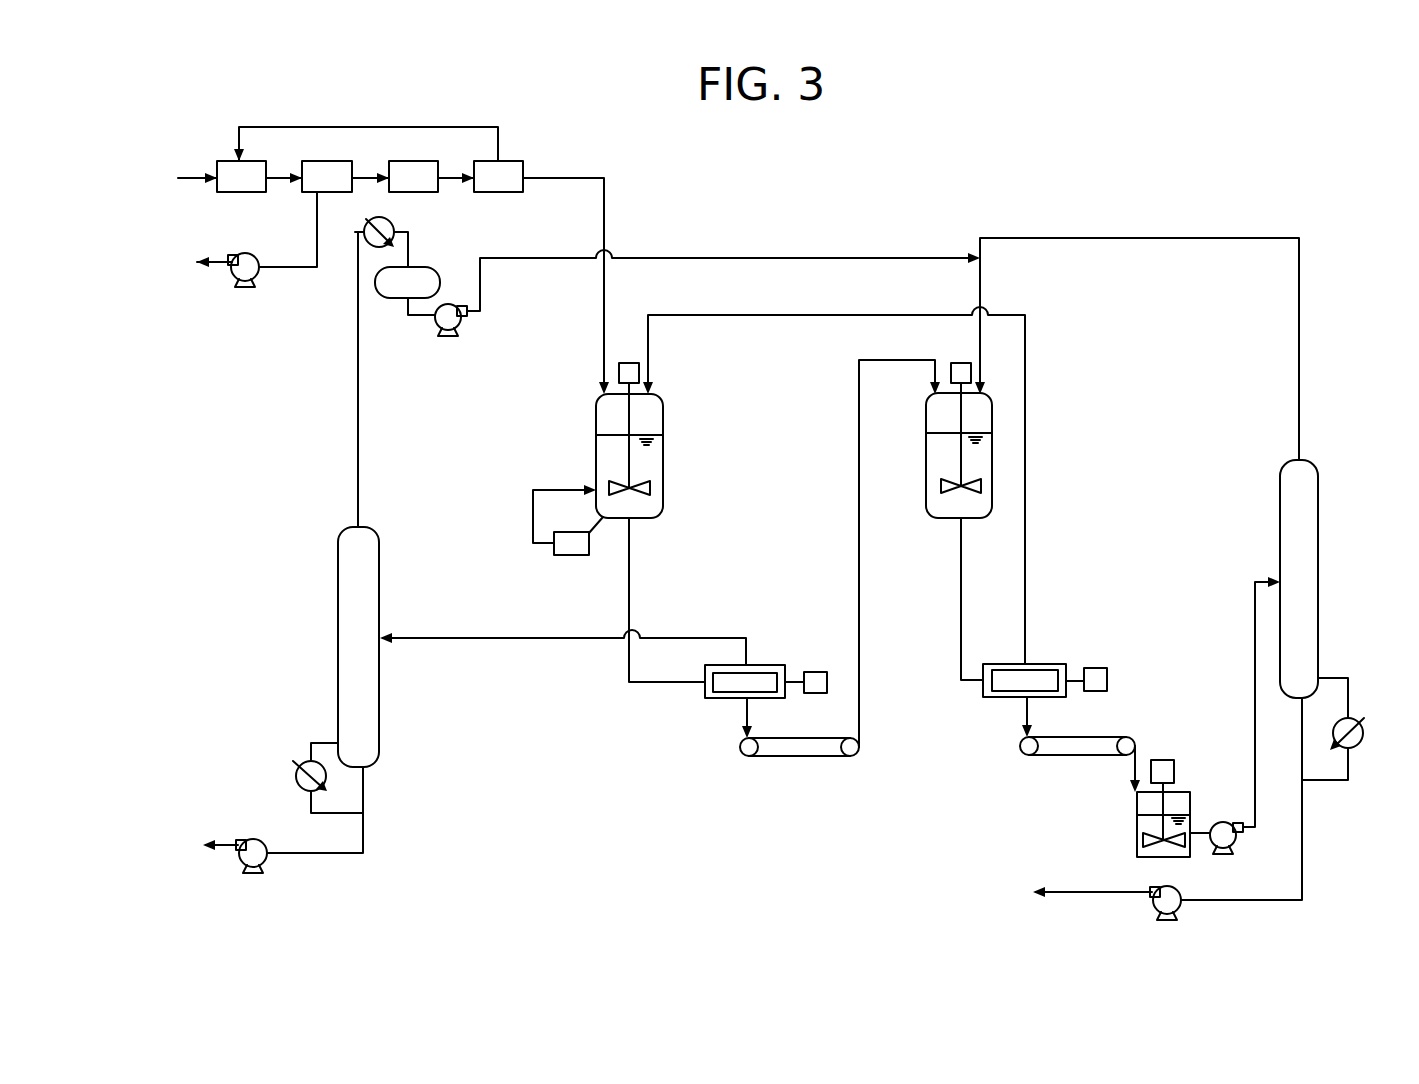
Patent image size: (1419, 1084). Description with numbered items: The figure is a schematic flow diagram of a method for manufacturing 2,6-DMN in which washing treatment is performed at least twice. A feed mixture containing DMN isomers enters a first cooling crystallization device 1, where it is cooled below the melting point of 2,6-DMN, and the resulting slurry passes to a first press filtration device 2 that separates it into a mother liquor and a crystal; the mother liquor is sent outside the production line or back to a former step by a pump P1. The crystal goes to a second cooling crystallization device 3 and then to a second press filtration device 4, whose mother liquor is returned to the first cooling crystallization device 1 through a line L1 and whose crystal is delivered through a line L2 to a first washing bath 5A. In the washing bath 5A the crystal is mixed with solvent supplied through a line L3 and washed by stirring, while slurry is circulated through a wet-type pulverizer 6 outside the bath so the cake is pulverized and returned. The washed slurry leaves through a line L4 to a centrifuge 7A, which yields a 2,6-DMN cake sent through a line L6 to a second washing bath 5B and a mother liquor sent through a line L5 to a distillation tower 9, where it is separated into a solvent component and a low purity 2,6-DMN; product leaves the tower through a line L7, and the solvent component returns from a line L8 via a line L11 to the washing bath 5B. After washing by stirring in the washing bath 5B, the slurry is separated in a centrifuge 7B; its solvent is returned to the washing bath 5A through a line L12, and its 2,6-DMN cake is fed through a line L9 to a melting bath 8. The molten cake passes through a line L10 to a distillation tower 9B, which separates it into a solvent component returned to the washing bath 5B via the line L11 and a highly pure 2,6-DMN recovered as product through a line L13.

The first cooling crystallization device 1 is at (243, 192).
The first press filtration device 2 is at (335, 192).
The second cooling crystallization device 3 is at (427, 192).
The second press filtration device 4 is at (513, 192).
The pump P1 is at (257, 255).
The line L1 is at (498, 135).
The line L2 is at (604, 190).
The line L3 is at (648, 345).
The line L4 is at (632, 578).
The line L5 is at (748, 645).
The line L6 is at (859, 625).
The line L7 is at (365, 838).
The line L8 is at (358, 410).
The line L9 is at (1020, 710).
The line L10 is at (1253, 608).
The line L11 is at (1130, 238).
The line L12 is at (1025, 478).
The line L13 is at (1100, 895).
The washing bath 5A is at (650, 414).
The washing bath 5B is at (926, 422).
The wet-type pulverizer 6 is at (565, 555).
The centrifuge 7A is at (730, 698).
The centrifuge 7B is at (1052, 664).
The melting bath 8 is at (1137, 830).
The distillation tower 9 is at (372, 550).
The distillation tower 9B is at (1280, 518).